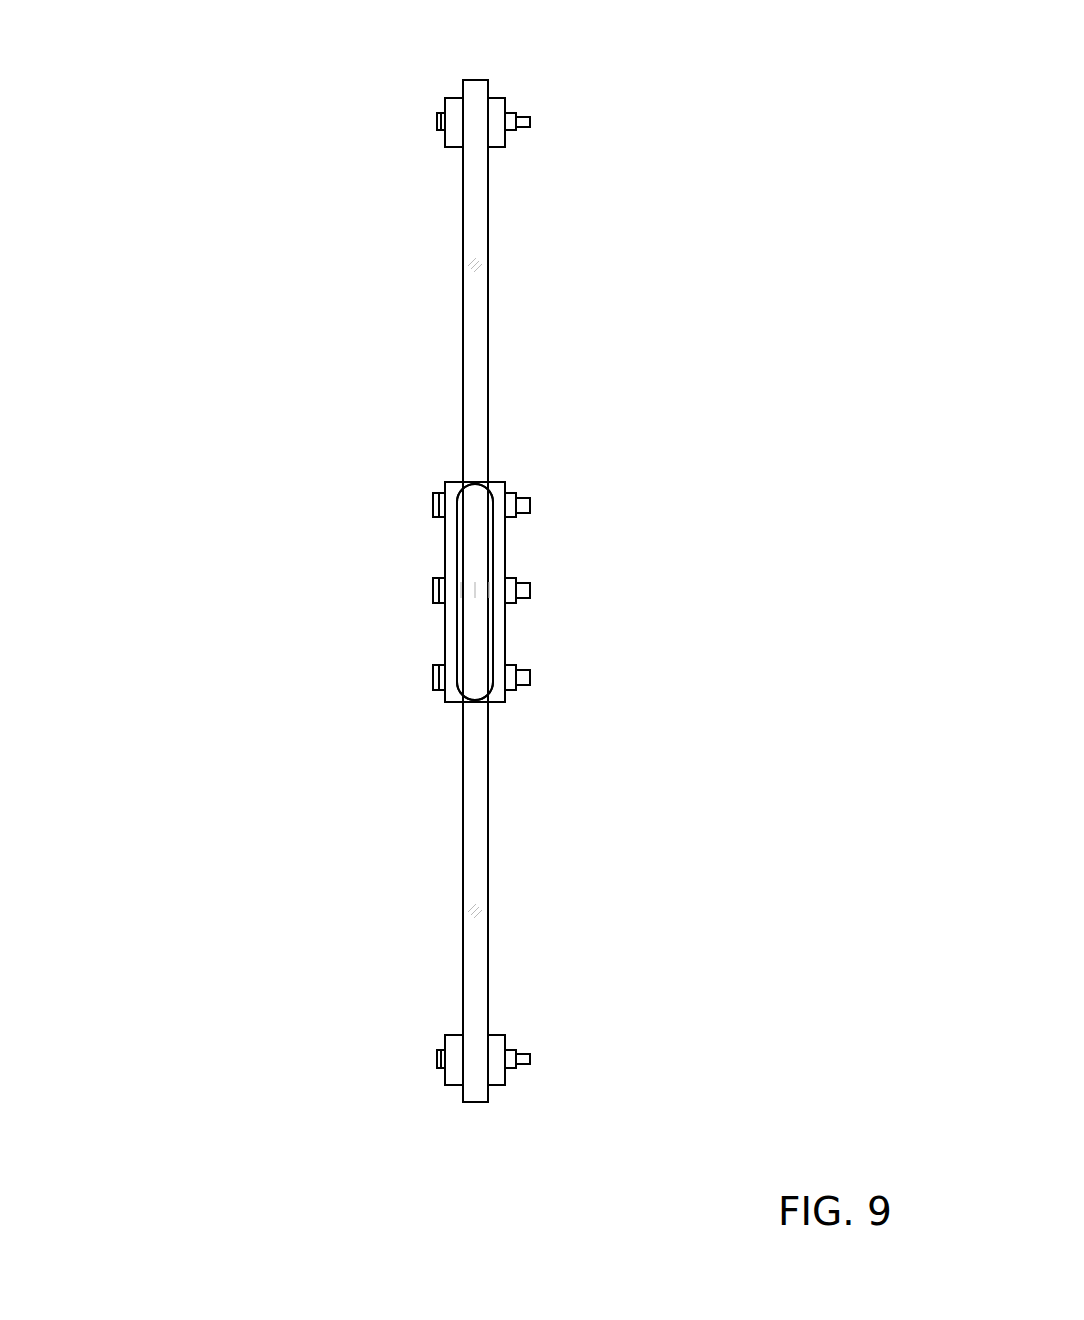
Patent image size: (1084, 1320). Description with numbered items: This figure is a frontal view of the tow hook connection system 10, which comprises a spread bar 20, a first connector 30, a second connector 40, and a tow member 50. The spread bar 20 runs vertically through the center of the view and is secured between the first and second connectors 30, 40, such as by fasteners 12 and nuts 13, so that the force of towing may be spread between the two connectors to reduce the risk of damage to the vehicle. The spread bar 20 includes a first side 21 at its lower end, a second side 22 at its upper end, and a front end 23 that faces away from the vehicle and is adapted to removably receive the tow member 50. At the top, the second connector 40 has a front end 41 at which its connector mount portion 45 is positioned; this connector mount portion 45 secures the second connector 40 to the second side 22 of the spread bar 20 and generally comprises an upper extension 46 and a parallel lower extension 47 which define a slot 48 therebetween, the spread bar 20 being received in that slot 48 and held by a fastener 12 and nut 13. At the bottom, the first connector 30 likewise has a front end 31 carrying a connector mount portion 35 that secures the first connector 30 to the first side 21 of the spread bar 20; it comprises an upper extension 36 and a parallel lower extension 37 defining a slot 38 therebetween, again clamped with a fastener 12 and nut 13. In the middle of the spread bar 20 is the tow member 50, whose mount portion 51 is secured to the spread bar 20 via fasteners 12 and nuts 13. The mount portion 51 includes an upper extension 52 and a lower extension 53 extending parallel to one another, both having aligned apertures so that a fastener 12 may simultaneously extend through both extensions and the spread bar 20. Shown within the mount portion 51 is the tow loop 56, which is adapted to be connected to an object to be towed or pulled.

The tow hook connection system 10 is at (203, 131).
The fasteners 12 is at (437, 117).
The nuts 13 is at (517, 115).
The spread bar 20 is at (448, 318).
The first side 21 is at (473, 1103).
The second side 22 is at (477, 79).
The front end 23 is at (475, 358).
The first connector 30 is at (430, 1037).
The front end 31 is at (455, 1067).
The connector mount portion 35 is at (497, 1042).
The upper extension 36 is at (455, 1087).
The lower extension 37 is at (507, 1085).
The slot 38 is at (470, 1040).
The second connector 40 is at (430, 100).
The front end 41 is at (455, 130).
The connector mount portion 45 is at (497, 103).
The upper extension 46 is at (455, 149).
The lower extension 47 is at (507, 145).
The slot 48 is at (473, 133).
The tow member 50 is at (522, 550).
The mount portion 51 is at (452, 702).
The upper extension 52 is at (445, 545).
The lower extension 53 is at (507, 633).
The tow loop 56 is at (480, 493).